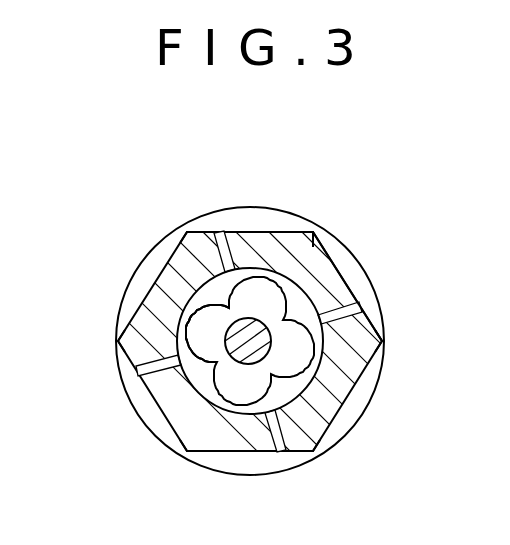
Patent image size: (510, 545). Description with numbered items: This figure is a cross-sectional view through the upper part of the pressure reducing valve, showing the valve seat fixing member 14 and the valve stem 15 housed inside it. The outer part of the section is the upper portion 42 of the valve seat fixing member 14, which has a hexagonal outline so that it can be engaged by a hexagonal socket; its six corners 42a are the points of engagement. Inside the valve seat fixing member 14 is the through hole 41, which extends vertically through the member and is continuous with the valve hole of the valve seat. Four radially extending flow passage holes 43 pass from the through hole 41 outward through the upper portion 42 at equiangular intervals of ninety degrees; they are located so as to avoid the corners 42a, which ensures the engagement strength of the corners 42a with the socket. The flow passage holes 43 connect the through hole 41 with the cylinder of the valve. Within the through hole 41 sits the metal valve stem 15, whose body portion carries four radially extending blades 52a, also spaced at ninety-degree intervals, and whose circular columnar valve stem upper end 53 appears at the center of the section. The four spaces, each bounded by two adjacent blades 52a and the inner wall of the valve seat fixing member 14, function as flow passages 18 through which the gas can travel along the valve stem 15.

The valve seat fixing member 14 is at (373, 381).
The valve stem 15 is at (297, 397).
The flow passages 18 is at (260, 398).
The through hole 41 is at (344, 282).
The upper portion 42 is at (322, 258).
The corners 42a is at (187, 231).
The flow passage holes 43 is at (225, 236).
The blades 52a is at (192, 314).
The valve stem upper end 53 is at (203, 312).